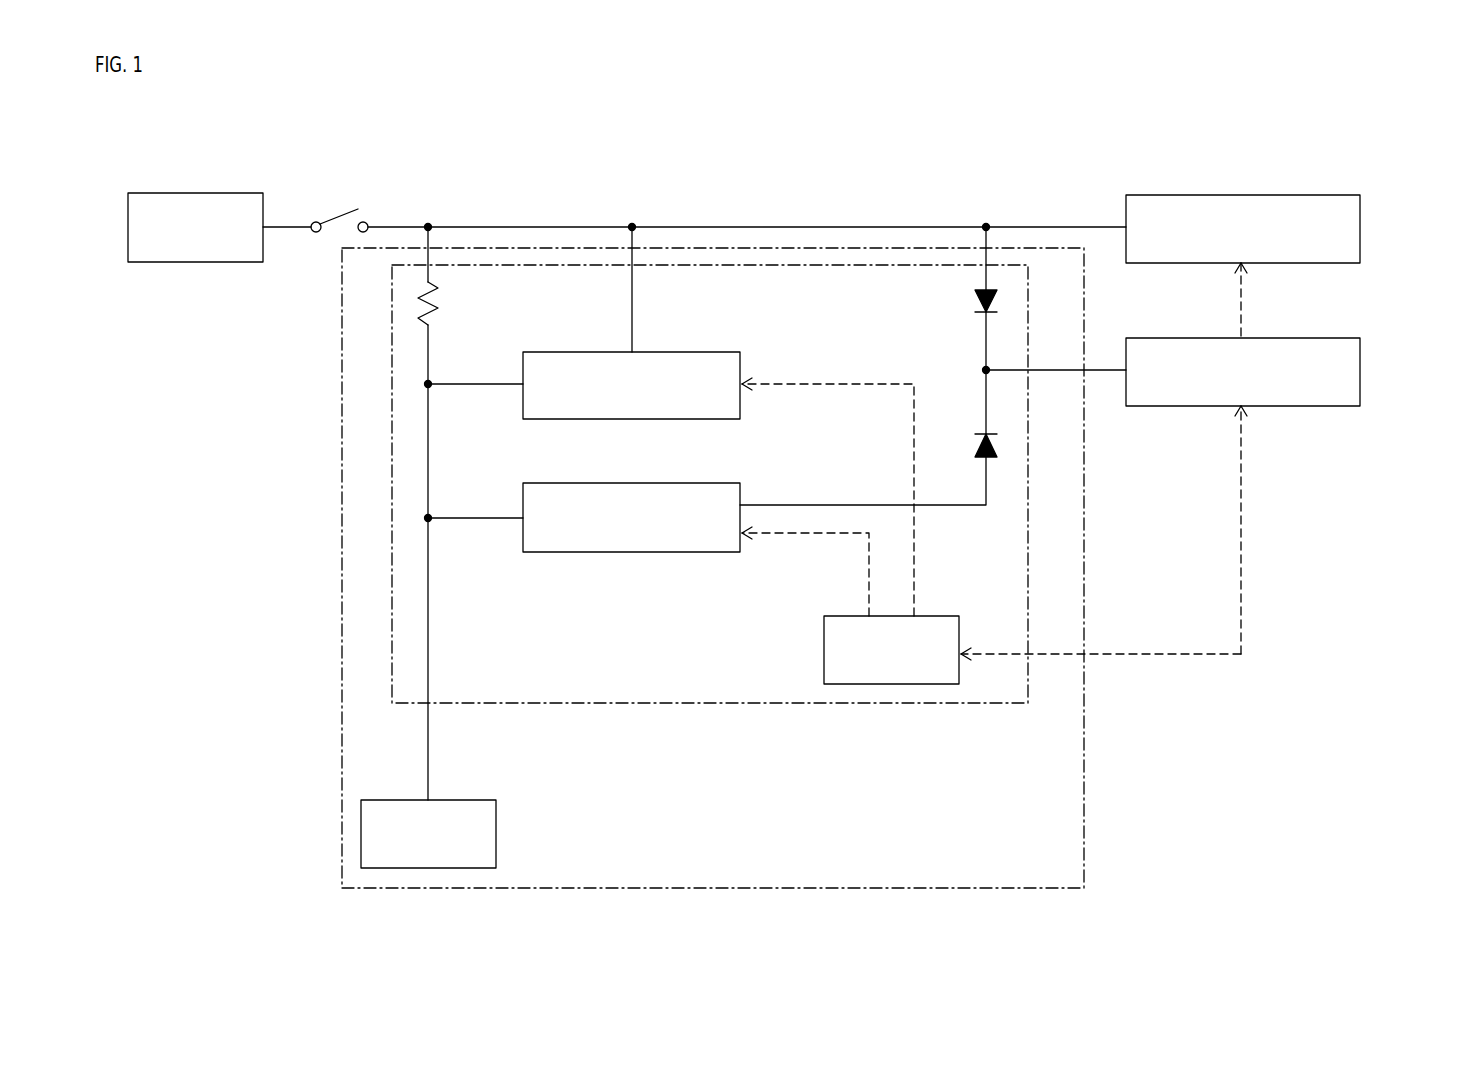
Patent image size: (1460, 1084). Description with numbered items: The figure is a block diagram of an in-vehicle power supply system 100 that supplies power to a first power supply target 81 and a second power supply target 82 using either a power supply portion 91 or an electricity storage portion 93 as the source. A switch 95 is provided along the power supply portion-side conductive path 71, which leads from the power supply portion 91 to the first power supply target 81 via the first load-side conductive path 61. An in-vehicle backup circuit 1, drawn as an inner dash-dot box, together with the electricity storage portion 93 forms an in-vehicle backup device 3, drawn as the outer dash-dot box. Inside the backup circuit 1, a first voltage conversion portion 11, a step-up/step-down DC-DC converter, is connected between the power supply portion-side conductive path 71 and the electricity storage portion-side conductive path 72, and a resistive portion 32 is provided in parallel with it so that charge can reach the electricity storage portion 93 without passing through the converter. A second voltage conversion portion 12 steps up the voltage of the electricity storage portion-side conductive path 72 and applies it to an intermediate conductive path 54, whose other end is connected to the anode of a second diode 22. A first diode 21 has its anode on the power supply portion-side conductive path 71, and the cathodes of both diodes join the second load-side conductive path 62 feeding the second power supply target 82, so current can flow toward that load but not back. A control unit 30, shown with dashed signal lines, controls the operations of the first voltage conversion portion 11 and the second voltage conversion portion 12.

The in-vehicle power supply system 100 is at (1195, 135).
The in-vehicle backup circuit 1 is at (931, 703).
The in-vehicle backup device 3 is at (1084, 788).
The first voltage conversion portion 11 is at (720, 352).
The second voltage conversion portion 12 is at (718, 483).
The first diode 21 is at (977, 302).
The second diode 22 is at (977, 440).
The control unit 30 is at (824, 650).
The resistive portion 32 is at (432, 318).
The intermediate conductive path 54 is at (842, 505).
The first load-side conductive path 61 is at (1046, 227).
The second load-side conductive path 62 is at (1098, 370).
The power supply portion-side conductive path 71 is at (527, 227).
The electricity storage portion-side conductive path 72 is at (428, 618).
The first power supply target 81 is at (1360, 227).
The second power supply target 82 is at (1360, 371).
The power supply portion 91 is at (205, 193).
The electricity storage portion 93 is at (456, 868).
The switch 95 is at (343, 208).